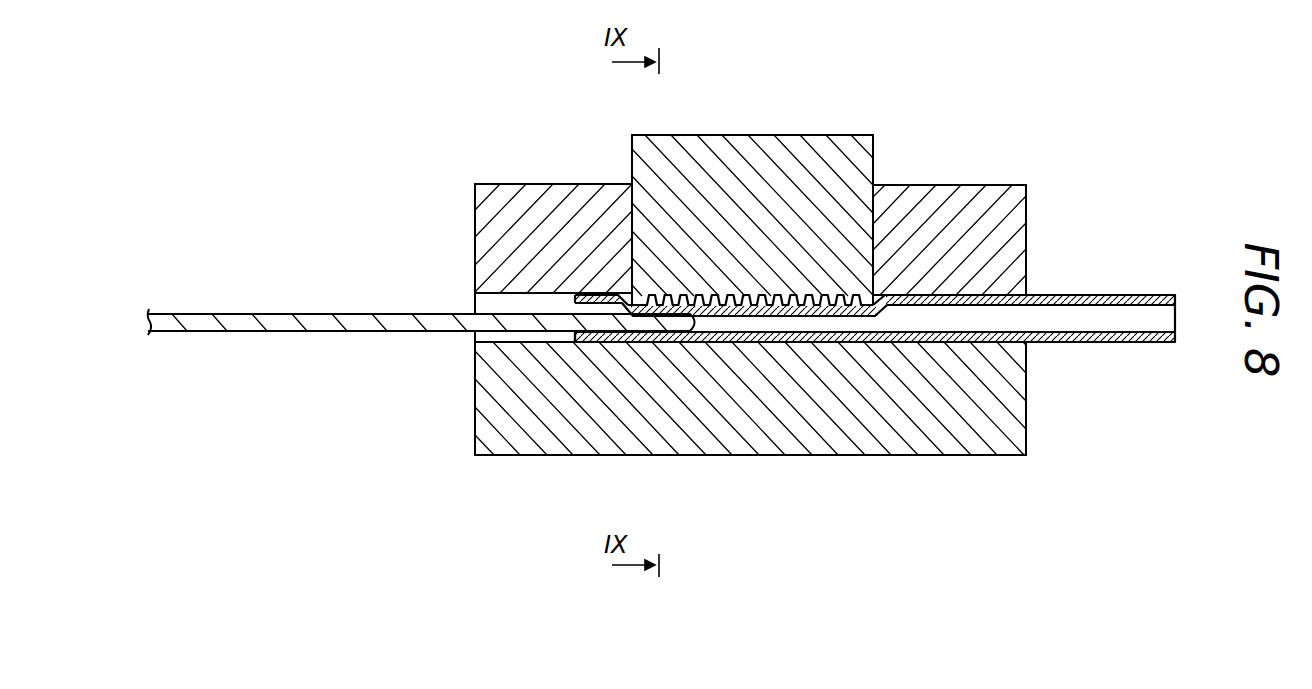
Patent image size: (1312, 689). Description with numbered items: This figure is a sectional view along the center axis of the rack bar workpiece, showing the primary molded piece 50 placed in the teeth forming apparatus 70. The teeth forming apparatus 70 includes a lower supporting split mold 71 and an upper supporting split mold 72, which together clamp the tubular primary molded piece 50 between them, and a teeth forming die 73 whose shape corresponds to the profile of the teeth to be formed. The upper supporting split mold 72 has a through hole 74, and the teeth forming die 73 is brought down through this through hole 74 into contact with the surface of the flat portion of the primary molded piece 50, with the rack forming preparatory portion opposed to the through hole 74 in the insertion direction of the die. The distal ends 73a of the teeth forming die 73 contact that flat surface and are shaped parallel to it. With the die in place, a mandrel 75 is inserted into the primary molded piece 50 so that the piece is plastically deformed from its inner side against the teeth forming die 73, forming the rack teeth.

The primary molded piece 50 is at (1117, 284).
The teeth forming apparatus 70 is at (1004, 178).
The lower supporting split mold 71 is at (972, 443).
The upper supporting split mold 72 is at (1013, 220).
The teeth forming die 73 is at (763, 143).
The distal ends 73a is at (785, 307).
The through hole 74 is at (862, 183).
The mandrel 75 is at (365, 324).